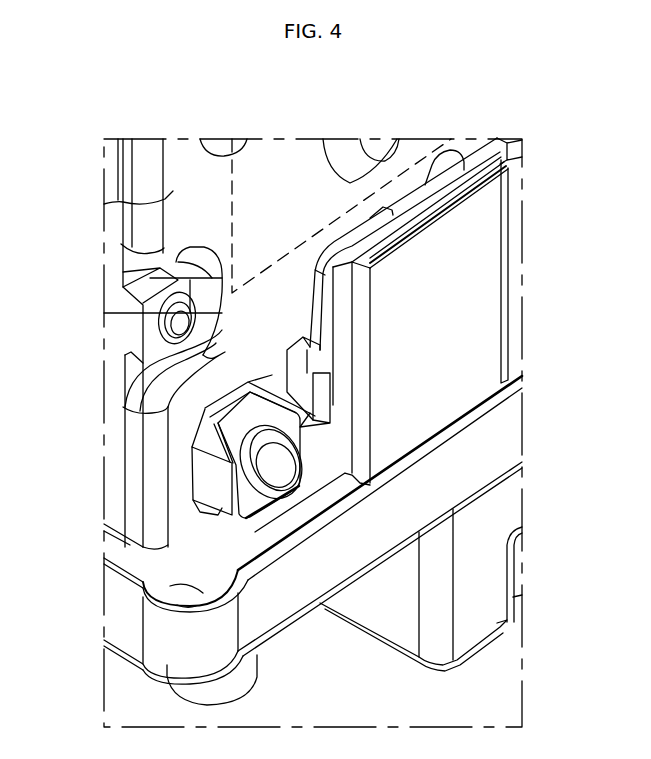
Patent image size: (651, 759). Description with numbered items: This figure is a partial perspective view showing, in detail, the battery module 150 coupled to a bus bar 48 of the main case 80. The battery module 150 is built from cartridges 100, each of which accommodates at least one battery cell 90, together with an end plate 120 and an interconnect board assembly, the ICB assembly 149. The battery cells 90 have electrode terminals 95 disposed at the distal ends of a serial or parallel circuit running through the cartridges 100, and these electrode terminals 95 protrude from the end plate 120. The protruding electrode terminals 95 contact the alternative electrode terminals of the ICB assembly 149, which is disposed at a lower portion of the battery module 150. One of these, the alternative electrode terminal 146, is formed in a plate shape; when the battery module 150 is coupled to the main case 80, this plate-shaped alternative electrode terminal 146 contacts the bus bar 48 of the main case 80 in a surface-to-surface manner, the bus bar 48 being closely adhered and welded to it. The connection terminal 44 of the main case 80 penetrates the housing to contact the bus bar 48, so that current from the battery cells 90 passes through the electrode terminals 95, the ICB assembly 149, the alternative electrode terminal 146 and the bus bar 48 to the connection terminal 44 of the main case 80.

The connection terminal 44 is at (237, 684).
The bus bar 48 is at (452, 380).
The main case 80 is at (277, 604).
The battery cell 90 is at (137, 313).
The electrode terminal 95 is at (310, 302).
The cartridge 100 is at (118, 268).
The end plate 120 is at (104, 204).
The alternative electrode terminal 146 is at (420, 203).
The interconnect board (ICB) assembly 149 is at (512, 262).
The battery module 150 is at (104, 168).